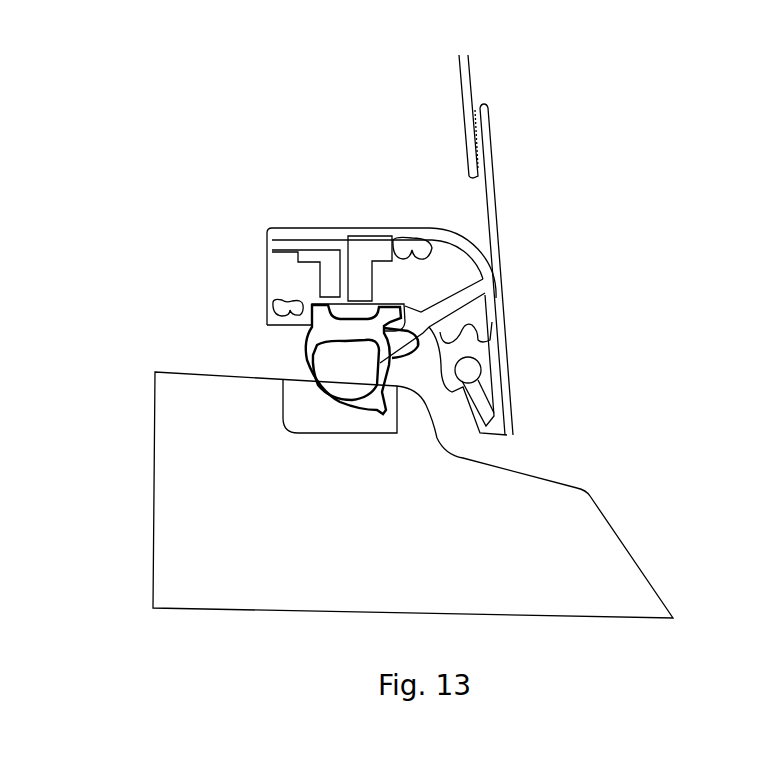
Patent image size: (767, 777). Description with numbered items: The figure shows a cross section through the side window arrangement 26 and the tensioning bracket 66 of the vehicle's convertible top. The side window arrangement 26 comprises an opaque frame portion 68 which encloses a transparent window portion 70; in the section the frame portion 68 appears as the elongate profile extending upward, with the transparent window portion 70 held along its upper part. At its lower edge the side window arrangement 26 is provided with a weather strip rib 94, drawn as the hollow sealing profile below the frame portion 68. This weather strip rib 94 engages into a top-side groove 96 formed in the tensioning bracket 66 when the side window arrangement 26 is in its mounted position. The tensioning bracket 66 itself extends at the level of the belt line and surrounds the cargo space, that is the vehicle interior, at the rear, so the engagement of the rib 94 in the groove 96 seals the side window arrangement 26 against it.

The transparent window portion 70 is at (465, 75).
The opaque frame portion 68 is at (495, 188).
The side window arrangement 26 is at (502, 280).
The weather strip rib 94 is at (305, 353).
The top-side groove 96 is at (305, 407).
The tensioning bracket 66 is at (582, 552).